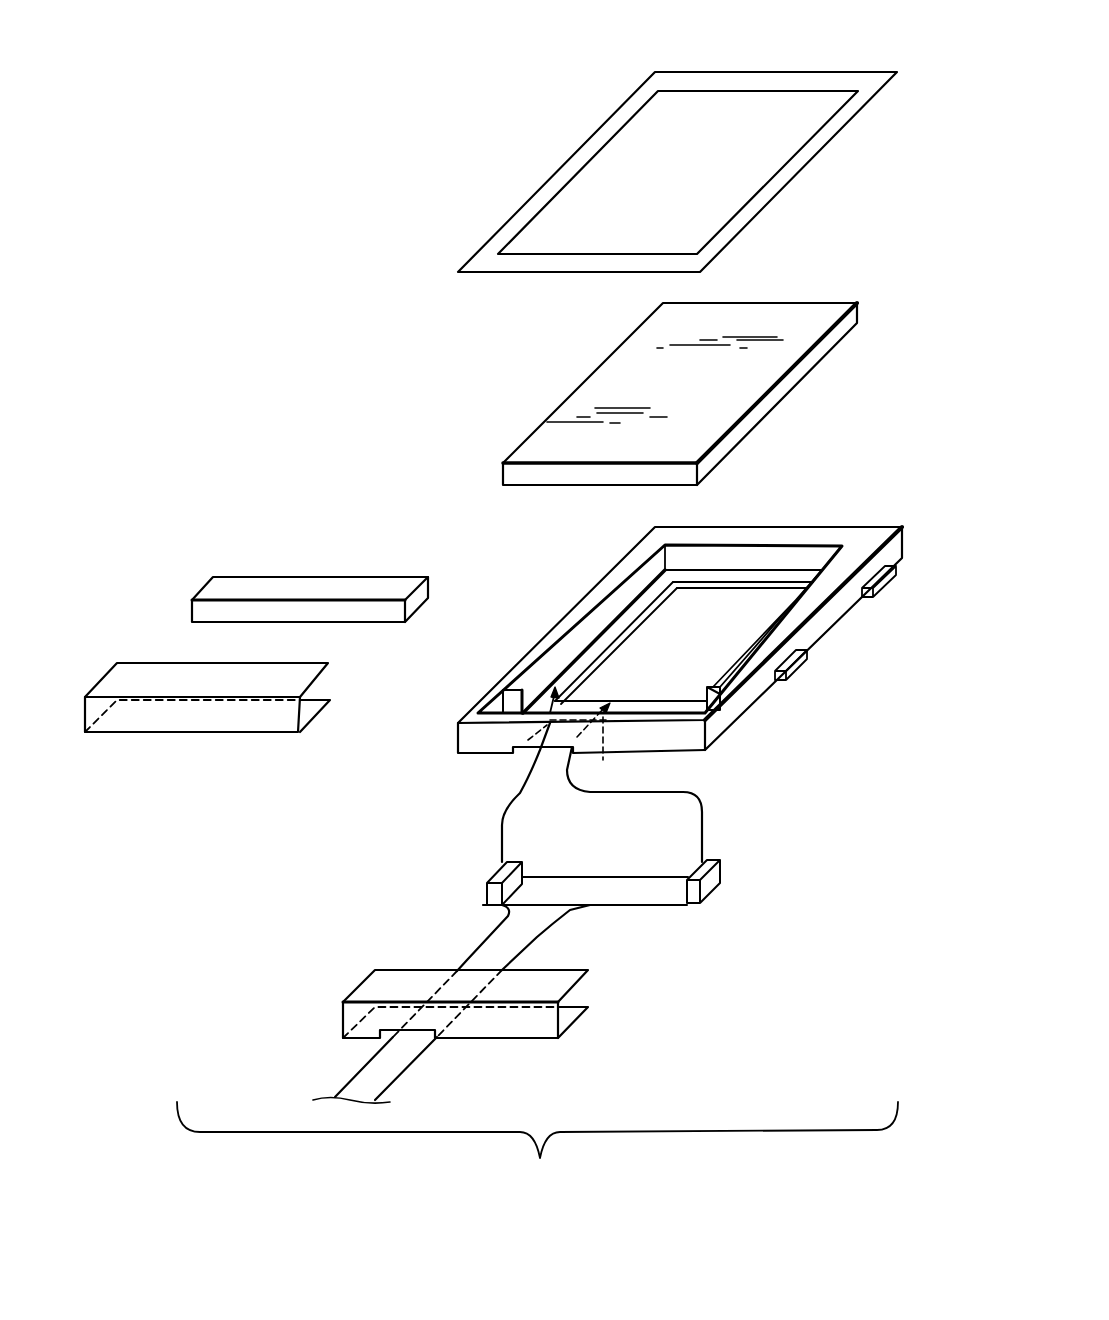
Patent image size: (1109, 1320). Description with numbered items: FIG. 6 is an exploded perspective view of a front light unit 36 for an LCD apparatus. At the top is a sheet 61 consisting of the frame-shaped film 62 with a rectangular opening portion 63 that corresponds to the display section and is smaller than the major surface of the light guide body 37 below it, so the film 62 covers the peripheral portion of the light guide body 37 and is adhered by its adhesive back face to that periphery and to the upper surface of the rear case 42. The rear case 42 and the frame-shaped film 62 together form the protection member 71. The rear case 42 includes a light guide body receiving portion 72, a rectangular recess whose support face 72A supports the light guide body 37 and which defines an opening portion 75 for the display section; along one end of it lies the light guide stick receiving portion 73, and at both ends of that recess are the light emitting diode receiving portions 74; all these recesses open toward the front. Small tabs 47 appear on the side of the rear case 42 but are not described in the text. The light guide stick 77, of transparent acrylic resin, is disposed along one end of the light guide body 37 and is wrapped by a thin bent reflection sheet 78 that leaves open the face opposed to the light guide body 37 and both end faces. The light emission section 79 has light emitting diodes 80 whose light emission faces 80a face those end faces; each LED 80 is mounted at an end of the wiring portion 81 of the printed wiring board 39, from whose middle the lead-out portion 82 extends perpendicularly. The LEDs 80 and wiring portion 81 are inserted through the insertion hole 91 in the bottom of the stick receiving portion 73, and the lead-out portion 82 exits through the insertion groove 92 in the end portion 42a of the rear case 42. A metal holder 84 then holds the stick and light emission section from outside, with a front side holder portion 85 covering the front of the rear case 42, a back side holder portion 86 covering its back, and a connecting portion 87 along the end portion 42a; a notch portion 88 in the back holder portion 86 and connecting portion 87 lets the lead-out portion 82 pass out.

The display unit 36 is at (404, 375).
The light guide body 37 is at (760, 380).
The printed wiring board 39 is at (495, 930).
The rear case 42 is at (893, 549).
The end portion 42a is at (682, 743).
The engagement tabs 47 is at (887, 588).
The light shielding sheet 61 is at (682, 149).
The frame-shaped film 62 is at (800, 80).
The opening portion 63 is at (727, 90).
The protection member 71 is at (693, 629).
The light guide body receiving portion 72 is at (788, 572).
The support face 72A is at (628, 615).
The light guide stick receiving portion 73 is at (640, 700).
The light emitting diode receiving portions 74 is at (495, 707).
The opening portion 75 is at (733, 584).
The light guide stick 77 is at (268, 577).
The reflection sheet 78 is at (147, 663).
The light emission section 79 is at (606, 898).
The light emitting diodes 80 is at (486, 891).
The light emission faces 80a is at (520, 878).
The wiring portion 81 is at (665, 895).
The lead-out portion 82 is at (530, 938).
The holder 84 is at (486, 1030).
The front side holder portion 85 is at (568, 980).
The back side holder portion 86 is at (568, 1017).
The connecting portion 87 is at (505, 1030).
The notch portion 88 is at (435, 1040).
The insertion hole 91 is at (603, 760).
The insertion groove 92 is at (522, 750).